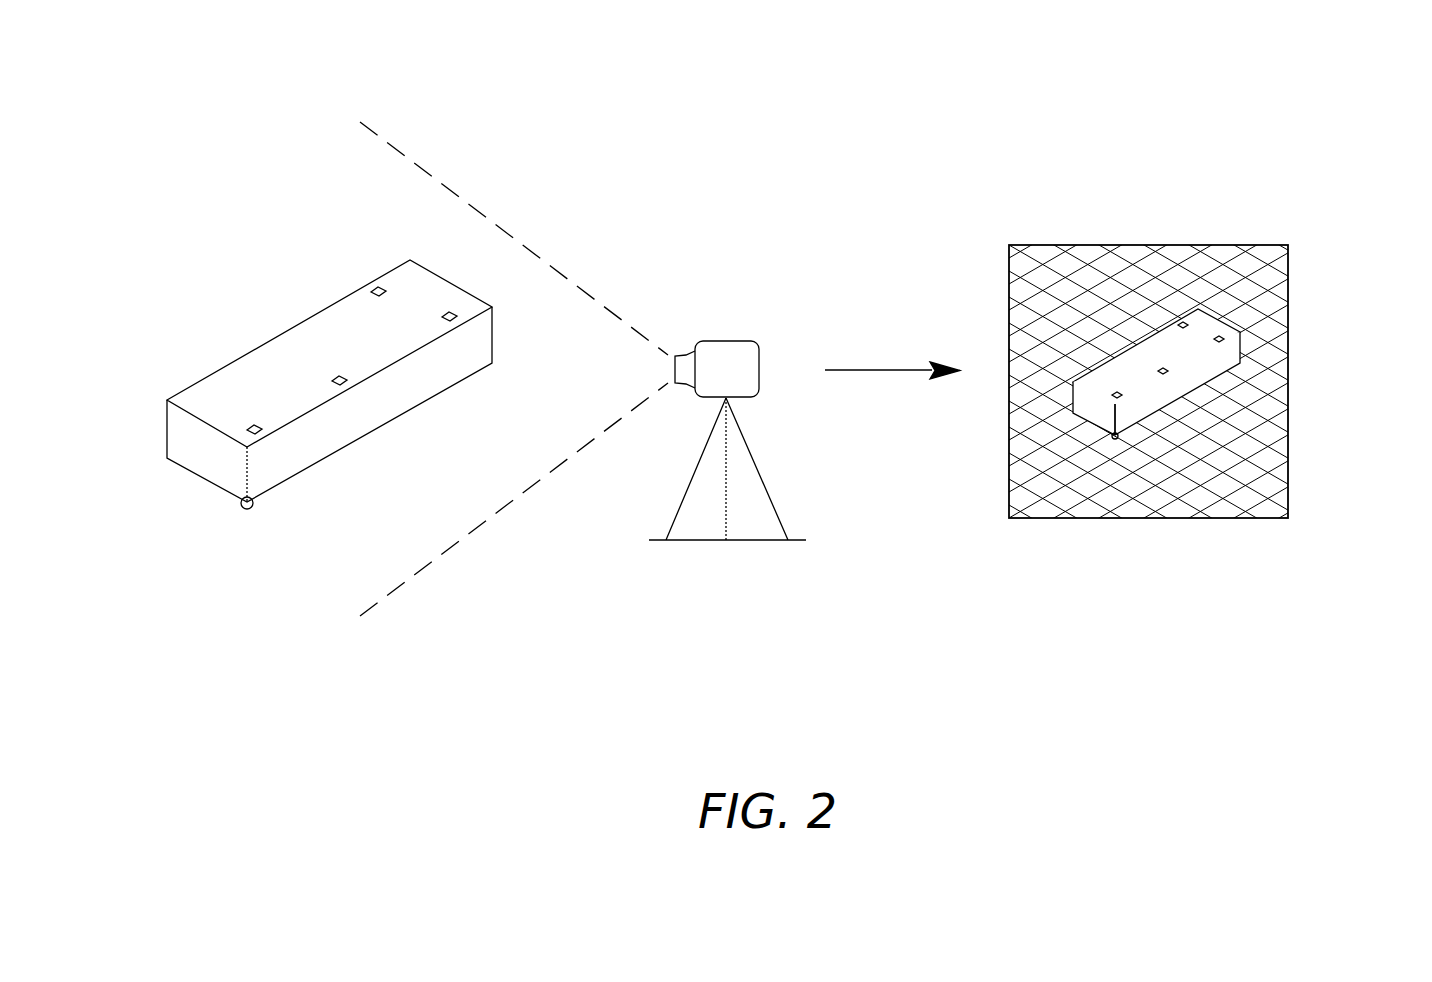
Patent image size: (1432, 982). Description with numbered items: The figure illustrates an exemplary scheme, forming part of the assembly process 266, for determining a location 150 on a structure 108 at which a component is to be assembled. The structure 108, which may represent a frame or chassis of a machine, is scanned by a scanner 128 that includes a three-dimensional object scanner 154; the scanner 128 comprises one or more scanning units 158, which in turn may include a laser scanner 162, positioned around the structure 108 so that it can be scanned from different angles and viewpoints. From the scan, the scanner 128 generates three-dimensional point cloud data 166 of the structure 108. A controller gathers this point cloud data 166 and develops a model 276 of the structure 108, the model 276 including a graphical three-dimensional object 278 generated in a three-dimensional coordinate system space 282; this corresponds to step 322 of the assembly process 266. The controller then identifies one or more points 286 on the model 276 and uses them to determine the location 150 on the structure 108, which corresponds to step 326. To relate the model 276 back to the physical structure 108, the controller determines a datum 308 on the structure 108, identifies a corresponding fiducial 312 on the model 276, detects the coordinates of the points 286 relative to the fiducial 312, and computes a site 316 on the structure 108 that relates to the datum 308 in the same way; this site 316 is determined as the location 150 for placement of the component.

The structure 108 is at (322, 306).
The scanner 128 is at (707, 383).
The 3-dimensional (3D) object scanner 154 is at (711, 337).
The location 150 is at (284, 360).
The site 316 is at (248, 420).
The scanning unit 158 is at (652, 336).
The laser scanner 162 is at (678, 355).
The 3D point cloud data 166 is at (1113, 348).
The assembly process 266 is at (1348, 92).
The model 276 is at (1168, 272).
The graphical 3D object 278 is at (1158, 326).
The 3D coordinate system space 282 is at (1262, 496).
The points 286 is at (1113, 405).
The datum 308 is at (256, 508).
The fiducial 312 is at (1118, 436).
The step 322 is at (1323, 170).
The step 326 is at (186, 246).